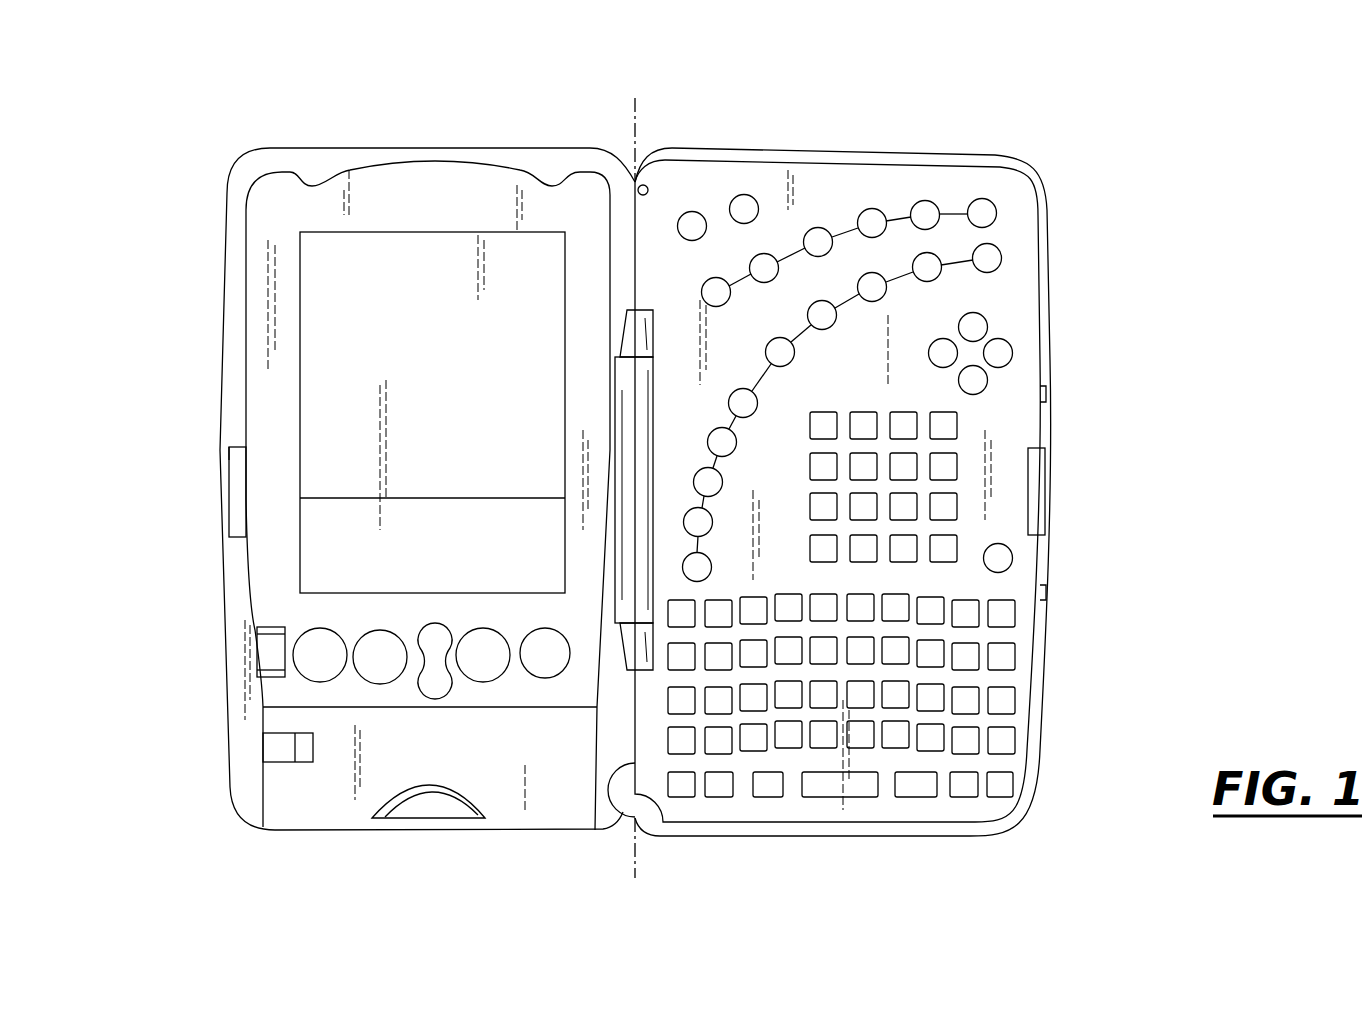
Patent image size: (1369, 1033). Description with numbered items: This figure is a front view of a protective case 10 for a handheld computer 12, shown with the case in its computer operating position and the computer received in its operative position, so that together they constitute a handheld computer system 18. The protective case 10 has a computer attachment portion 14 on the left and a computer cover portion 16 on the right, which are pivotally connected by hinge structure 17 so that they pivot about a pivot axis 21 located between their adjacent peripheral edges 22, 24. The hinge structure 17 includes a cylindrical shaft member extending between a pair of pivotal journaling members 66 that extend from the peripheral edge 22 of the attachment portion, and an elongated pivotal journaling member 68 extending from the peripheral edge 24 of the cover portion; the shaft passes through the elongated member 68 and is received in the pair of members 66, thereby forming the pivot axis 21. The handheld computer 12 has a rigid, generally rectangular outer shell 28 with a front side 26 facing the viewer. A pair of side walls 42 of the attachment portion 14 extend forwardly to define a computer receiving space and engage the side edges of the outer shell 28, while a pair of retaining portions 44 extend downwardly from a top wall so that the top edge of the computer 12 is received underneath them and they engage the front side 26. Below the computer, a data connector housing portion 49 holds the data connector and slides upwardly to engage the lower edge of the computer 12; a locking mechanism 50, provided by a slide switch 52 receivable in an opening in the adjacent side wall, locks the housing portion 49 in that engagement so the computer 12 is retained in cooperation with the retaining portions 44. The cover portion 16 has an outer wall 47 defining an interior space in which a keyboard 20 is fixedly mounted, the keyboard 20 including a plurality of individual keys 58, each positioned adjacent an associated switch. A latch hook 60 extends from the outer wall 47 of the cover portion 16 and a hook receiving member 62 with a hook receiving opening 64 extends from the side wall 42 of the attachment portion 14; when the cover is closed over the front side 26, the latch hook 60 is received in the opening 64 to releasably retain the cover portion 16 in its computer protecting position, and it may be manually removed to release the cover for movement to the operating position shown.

The protective case 10 is at (942, 142).
The handheld computer 12 is at (435, 190).
The computer attachment portion 14 is at (220, 237).
The computer cover portion 16 is at (1054, 250).
The hinge structure 17 is at (583, 377).
The handheld computer system 18 is at (845, 106).
The keyboard 20 is at (1044, 384).
The pivot axis 21 is at (637, 134).
The peripheral edge 22 is at (638, 188).
The peripheral edge 24 is at (640, 826).
The front side 26 is at (262, 190).
The outer shell 28 is at (246, 356).
The side walls 42 is at (233, 285).
The retaining portions 44 is at (325, 176).
The outer wall 47 is at (1044, 708).
The data connector housing portion 49 is at (497, 782).
The locking mechanism 50 is at (252, 750).
The slide switch 52 is at (278, 758).
The keys 58 is at (1000, 797).
The latch hook 60 is at (1043, 492).
The hook receiving member 62 is at (236, 487).
The hook receiving opening 64 is at (236, 455).
The pivotal journaling members 66 is at (633, 327).
The elongated pivotal journaling member 68 is at (626, 444).